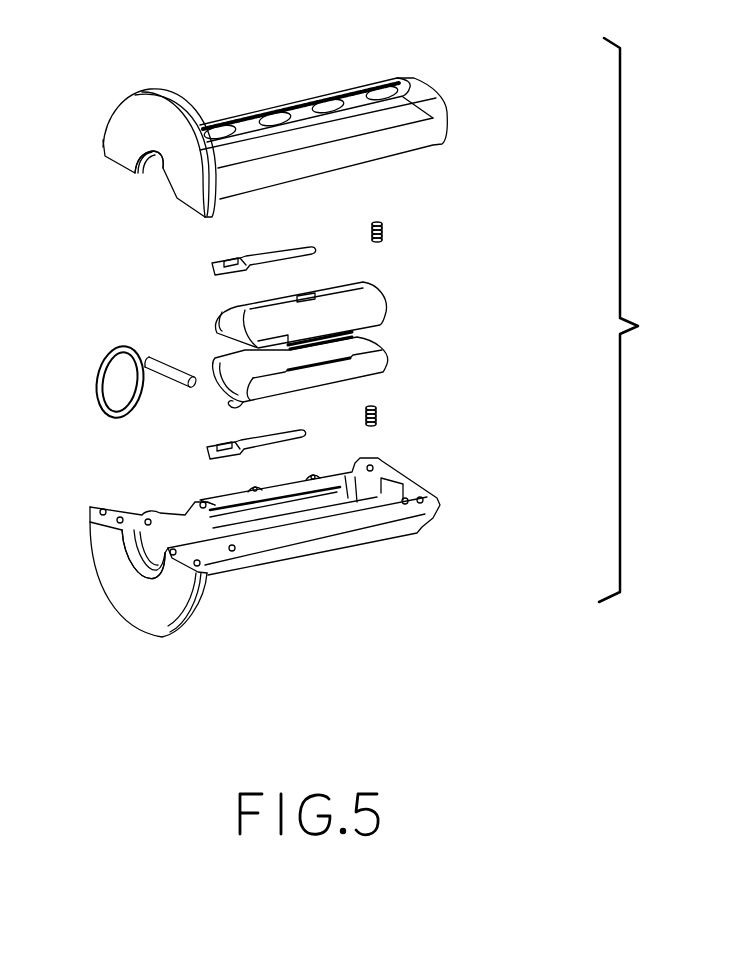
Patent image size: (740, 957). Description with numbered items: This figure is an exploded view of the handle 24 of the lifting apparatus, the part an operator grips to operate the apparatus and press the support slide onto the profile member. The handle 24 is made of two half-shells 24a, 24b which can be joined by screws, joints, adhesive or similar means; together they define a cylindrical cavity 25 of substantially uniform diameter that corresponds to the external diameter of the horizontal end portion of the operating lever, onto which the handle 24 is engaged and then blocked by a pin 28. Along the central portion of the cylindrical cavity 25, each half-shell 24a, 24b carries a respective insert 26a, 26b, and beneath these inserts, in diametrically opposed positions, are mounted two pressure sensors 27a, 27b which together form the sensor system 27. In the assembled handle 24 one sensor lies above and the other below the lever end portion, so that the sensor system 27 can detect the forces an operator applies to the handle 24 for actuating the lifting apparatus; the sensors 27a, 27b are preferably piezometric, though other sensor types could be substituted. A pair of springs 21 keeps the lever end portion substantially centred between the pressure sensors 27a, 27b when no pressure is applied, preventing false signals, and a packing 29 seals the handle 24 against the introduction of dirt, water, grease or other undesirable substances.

The handle 24 is at (638, 326).
The half-shell 24a is at (376, 127).
The half-shell 24b is at (360, 530).
The cylindrical cavity 25 is at (162, 166).
The springs 21 is at (383, 230).
The insert 26a is at (362, 307).
The insert 26b is at (362, 373).
The sensor system 27 is at (236, 334).
The pressure sensor 27a is at (263, 256).
The pressure sensor 27b is at (268, 447).
The pin 28 is at (162, 372).
The packing 29 is at (97, 378).